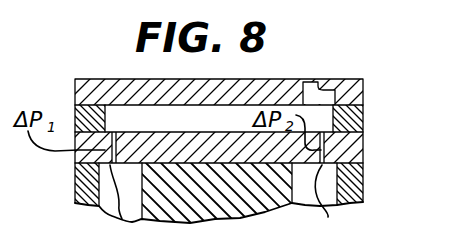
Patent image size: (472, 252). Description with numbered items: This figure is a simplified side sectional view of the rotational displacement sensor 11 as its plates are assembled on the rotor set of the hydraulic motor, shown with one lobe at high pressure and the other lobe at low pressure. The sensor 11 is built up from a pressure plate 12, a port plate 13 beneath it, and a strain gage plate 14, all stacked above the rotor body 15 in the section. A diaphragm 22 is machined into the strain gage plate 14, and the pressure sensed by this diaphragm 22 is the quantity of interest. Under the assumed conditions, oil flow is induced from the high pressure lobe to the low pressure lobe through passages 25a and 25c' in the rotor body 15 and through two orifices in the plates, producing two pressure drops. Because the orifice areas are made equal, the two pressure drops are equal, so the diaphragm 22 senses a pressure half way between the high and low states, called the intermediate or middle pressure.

The rotational displacement sensor 11 is at (70, 85).
The pressure plate 12 is at (363, 93).
The port plate 13 is at (363, 120).
The strain gage plate 14 is at (363, 143).
The base body 15 is at (363, 193).
The diaphragm 22 is at (363, 88).
The flow passage 25a is at (120, 220).
The flow passage 25c' is at (296, 203).